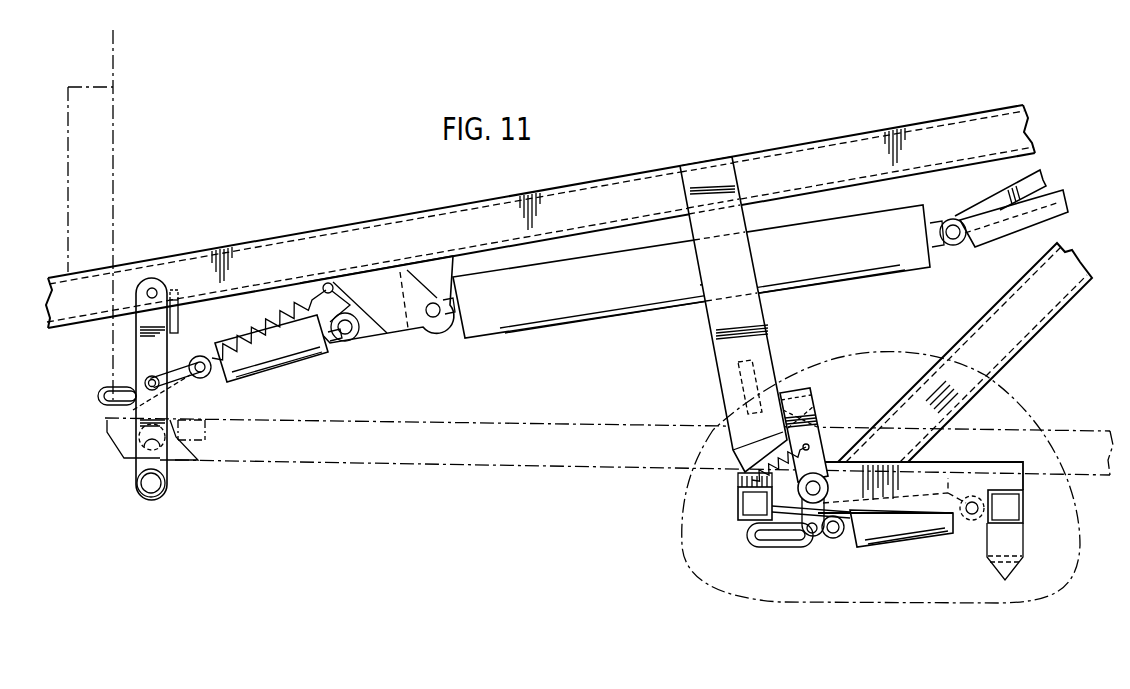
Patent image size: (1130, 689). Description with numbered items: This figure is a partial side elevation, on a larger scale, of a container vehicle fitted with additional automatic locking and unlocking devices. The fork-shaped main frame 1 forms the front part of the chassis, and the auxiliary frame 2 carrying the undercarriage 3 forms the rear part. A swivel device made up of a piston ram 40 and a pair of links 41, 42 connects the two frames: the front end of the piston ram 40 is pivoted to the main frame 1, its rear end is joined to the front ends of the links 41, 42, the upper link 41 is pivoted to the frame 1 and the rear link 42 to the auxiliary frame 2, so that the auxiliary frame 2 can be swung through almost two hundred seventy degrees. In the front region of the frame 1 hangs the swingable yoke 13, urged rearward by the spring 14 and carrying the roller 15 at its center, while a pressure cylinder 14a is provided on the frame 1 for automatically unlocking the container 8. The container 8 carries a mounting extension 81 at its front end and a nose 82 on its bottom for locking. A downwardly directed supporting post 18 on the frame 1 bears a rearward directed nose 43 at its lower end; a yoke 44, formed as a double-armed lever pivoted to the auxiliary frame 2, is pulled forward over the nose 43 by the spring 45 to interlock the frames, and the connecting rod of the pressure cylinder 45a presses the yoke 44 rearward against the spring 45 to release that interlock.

The main frame 1 is at (462, 214).
The auxiliary frame 2 is at (1034, 336).
The undercarriage 3 is at (668, 569).
The container 8 is at (596, 463).
The yoke 13 is at (142, 352).
The spring 14 is at (262, 326).
The pressure cylinder 14a is at (270, 362).
The roller 15 is at (131, 441).
The supporting post 18 is at (710, 328).
The piston ram 40 is at (876, 269).
The upper link 41 is at (1000, 202).
The rear link 42 is at (1018, 226).
The nose 43 is at (820, 412).
The yoke 44 is at (795, 394).
The spring 45 is at (738, 502).
The pressure cylinder 45a is at (918, 522).
The mounting extension 81 is at (85, 87).
The nose 82 is at (202, 455).